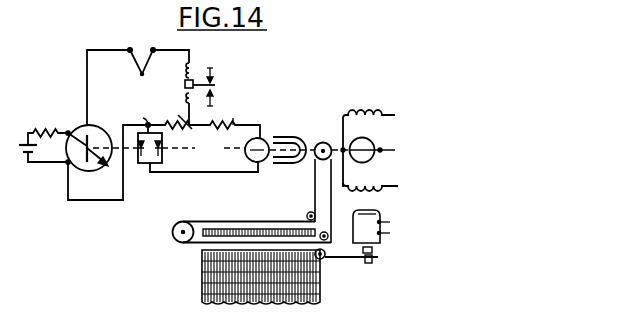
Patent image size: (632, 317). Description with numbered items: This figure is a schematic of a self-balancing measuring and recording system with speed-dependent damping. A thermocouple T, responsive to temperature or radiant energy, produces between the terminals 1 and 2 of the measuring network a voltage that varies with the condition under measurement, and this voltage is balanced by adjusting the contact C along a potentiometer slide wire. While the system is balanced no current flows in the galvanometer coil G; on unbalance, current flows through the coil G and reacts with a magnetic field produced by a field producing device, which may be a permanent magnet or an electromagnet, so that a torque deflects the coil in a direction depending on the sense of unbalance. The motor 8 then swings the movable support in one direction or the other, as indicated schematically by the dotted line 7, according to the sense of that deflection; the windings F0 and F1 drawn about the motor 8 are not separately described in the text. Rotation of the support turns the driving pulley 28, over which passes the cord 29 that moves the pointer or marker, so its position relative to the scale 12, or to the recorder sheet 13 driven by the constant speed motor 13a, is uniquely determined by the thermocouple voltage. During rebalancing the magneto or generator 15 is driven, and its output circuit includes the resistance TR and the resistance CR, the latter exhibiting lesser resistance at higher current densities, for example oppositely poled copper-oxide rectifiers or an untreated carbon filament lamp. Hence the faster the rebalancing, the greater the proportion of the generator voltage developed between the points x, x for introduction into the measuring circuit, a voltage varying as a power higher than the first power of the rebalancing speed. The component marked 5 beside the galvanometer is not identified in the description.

The terminal 1 is at (130, 48).
The terminal 2 is at (153, 48).
The transistor amplifier 5 is at (96, 124).
The dotted line 7 is at (239, 114).
The motor 8 is at (370, 147).
The scale 12 is at (219, 228).
The recorder sheet 13 is at (200, 290).
The constant speed motor 13a is at (362, 252).
The magneto or generator 15 is at (266, 135).
The driving pulley 28 is at (323, 142).
The cord 29 is at (282, 221).
The thermocouple T is at (143, 84).
The coil G is at (193, 84).
The contact C is at (92, 172).
The resistance CR is at (148, 165).
The resistance TR is at (182, 128).
The field coil F0 is at (378, 108).
The field coil F1 is at (366, 192).
The points x is at (163, 116).